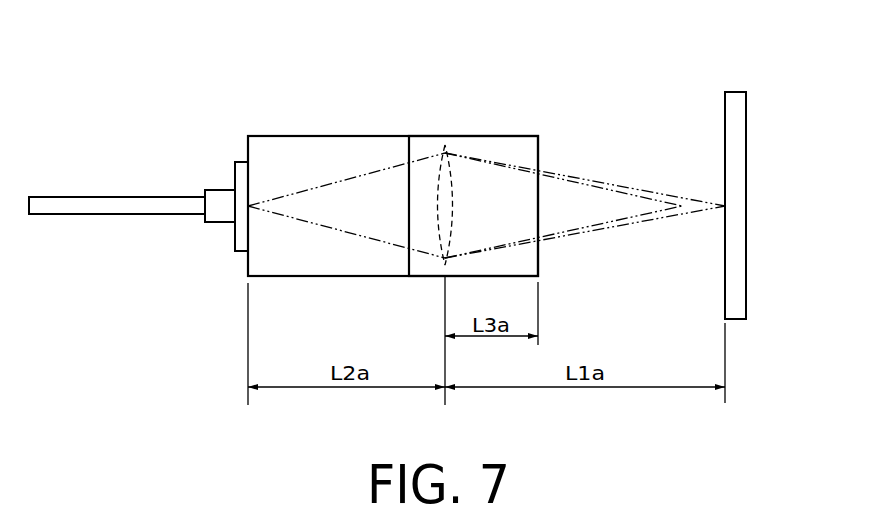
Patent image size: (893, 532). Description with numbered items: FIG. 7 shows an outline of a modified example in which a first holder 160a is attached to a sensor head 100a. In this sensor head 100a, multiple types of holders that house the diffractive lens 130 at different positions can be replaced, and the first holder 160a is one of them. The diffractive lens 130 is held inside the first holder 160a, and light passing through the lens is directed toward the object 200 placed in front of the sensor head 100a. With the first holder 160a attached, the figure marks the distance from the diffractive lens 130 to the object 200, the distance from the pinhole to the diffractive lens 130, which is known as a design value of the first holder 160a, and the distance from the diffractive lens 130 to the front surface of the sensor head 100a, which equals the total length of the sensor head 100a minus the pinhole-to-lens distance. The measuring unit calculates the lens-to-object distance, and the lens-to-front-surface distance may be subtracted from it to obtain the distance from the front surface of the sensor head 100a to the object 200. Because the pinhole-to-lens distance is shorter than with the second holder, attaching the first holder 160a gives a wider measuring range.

The sensor head 100a is at (230, 103).
The diffractive lens 130 is at (446, 144).
The first holder 160a is at (503, 136).
The object 200 is at (735, 91).